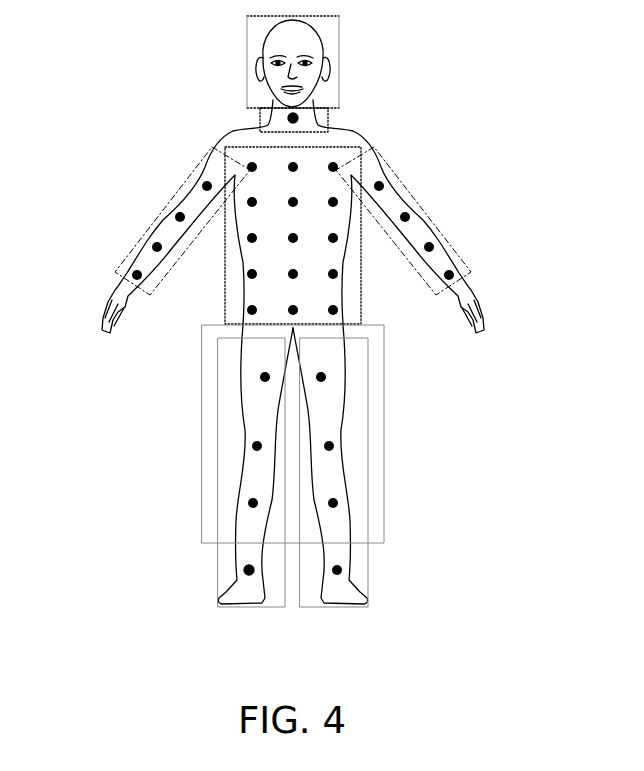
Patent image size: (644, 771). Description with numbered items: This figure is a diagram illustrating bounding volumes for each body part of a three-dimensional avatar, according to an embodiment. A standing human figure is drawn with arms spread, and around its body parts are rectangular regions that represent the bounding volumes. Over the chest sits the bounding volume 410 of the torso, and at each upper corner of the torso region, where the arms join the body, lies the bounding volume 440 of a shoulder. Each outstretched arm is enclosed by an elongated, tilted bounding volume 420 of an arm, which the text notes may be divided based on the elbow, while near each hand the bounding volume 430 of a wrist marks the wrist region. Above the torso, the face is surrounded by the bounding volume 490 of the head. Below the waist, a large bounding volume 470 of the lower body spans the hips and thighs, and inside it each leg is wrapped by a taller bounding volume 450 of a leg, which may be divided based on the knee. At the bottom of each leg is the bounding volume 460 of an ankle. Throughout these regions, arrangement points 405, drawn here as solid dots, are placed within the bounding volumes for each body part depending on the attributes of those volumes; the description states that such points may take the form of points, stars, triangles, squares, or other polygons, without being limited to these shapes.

The arrangement points 405 is at (298, 115).
The bounding volumes of torso 410 is at (362, 285).
The bounding volumes of an arm 420 is at (422, 206).
The bounding volumes of a wrist 430 is at (117, 280).
The bounding volumes of a shoulder 440 is at (352, 150).
The bounding volumes of a leg 450 is at (338, 482).
The bounding volumes of an ankle 460 is at (245, 568).
The bounding volumes of a lower body 470 is at (187, 394).
The bounding volumes of a head 490 is at (340, 64).